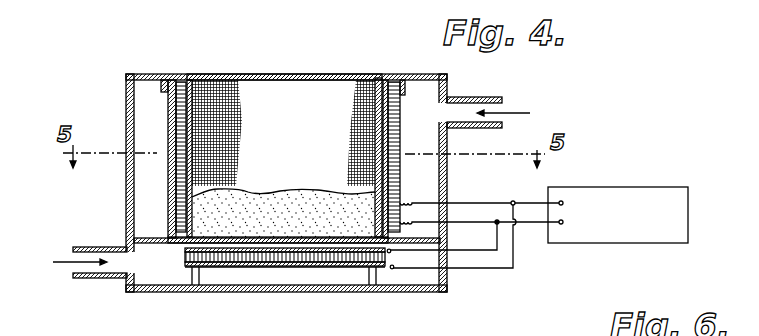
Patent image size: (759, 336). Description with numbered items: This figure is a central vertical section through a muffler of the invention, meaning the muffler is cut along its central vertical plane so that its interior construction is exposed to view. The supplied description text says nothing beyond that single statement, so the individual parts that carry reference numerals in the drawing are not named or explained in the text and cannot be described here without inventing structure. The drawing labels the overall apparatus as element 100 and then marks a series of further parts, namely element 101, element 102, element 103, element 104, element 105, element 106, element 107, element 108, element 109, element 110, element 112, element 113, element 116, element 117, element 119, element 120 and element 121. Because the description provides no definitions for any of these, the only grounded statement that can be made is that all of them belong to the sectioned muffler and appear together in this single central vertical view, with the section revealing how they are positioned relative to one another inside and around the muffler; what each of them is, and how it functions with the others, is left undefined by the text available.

The induction furnace assembly 100 is at (462, 89).
The housing side wall 101 is at (126, 95).
The housing bottom wall 102 is at (245, 292).
The exhaust gas outlet pipe 103 is at (127, 273).
The crucible 104 is at (163, 79).
The air inlet pipe 105 is at (500, 100).
The housing top wall 106 is at (143, 74).
The support plate 107 is at (153, 240).
The cover 108 is at (330, 73).
The liner wall 109 is at (371, 118).
The powder charge 110 is at (245, 238).
The gas space 112 is at (290, 74).
The induction heating coil 113 is at (161, 183).
The lower heating coil 116 is at (317, 274).
The coil support 117 is at (384, 275).
The lead wire 119 is at (497, 188).
The lead wire 120 is at (483, 270).
The high frequency generator 121 is at (688, 219).